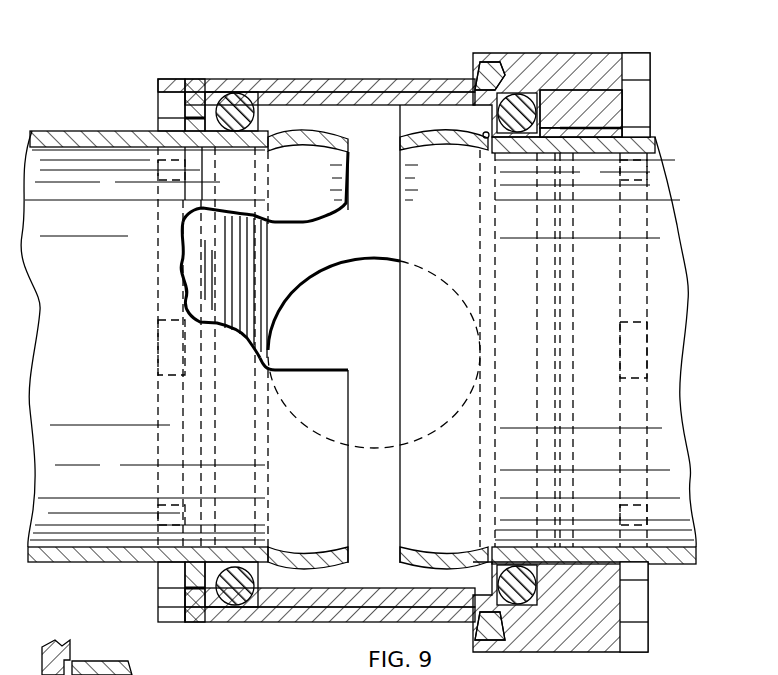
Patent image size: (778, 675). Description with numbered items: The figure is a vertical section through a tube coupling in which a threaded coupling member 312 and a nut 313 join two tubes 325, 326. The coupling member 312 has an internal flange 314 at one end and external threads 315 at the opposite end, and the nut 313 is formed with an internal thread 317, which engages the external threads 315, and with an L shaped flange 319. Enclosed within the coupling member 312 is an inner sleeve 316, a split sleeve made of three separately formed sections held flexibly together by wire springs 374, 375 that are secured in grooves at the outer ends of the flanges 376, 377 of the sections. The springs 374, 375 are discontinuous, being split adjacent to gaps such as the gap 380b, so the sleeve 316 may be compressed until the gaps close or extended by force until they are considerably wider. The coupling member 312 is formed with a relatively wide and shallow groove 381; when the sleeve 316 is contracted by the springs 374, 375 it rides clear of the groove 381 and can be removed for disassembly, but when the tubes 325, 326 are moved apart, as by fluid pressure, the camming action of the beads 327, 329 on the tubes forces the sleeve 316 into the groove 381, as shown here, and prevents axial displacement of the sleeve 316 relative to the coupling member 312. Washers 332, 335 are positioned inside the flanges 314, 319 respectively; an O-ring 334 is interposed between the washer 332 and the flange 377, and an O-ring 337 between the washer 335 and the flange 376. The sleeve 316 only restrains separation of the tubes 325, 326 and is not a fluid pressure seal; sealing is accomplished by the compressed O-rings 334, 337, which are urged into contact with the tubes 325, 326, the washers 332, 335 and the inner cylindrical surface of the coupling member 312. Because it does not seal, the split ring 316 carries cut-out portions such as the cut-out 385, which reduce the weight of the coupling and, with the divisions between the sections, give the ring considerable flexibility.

The threaded coupling member 312 is at (352, 79).
The nut 313 is at (575, 53).
The internal flange 314 is at (192, 105).
The external threads 315 is at (515, 72).
The inner sleeve 316 is at (402, 96).
The internal thread 317 is at (473, 78).
The L shaped flange 319 is at (612, 104).
The tube 325 is at (80, 131).
The tube 326 is at (680, 557).
The bead 327 is at (310, 566).
The bead 329 is at (452, 566).
The washer 332 is at (185, 118).
The O-ring 334 is at (242, 95).
The washer 335 is at (622, 128).
The O-ring 337 is at (484, 139).
The wire spring 374 is at (132, 670).
The wire spring 375 is at (262, 240).
The flange 376 is at (485, 118).
The flange 377 is at (268, 118).
The gap 380b is at (278, 352).
The groove 381 is at (322, 622).
The cut-out portion 385 is at (345, 262).